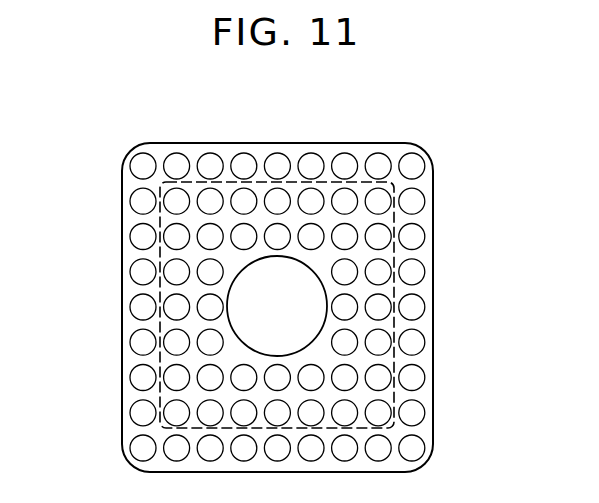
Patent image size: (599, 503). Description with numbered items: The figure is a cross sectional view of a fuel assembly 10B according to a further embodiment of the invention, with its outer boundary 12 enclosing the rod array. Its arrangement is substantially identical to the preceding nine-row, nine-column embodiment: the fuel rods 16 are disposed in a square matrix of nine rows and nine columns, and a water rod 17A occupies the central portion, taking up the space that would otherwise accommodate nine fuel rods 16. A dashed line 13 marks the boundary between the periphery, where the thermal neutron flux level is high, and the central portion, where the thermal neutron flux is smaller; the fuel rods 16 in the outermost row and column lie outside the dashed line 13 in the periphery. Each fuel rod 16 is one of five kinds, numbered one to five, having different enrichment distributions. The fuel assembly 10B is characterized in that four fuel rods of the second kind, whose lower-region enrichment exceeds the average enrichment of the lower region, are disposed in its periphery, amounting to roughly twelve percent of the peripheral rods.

The fuel assembly 10B is at (122, 295).
The package body 12 is at (385, 143).
The dashed line 13 is at (394, 396).
The fuel rods 16 is at (424, 234).
The water rod 17A is at (325, 312).